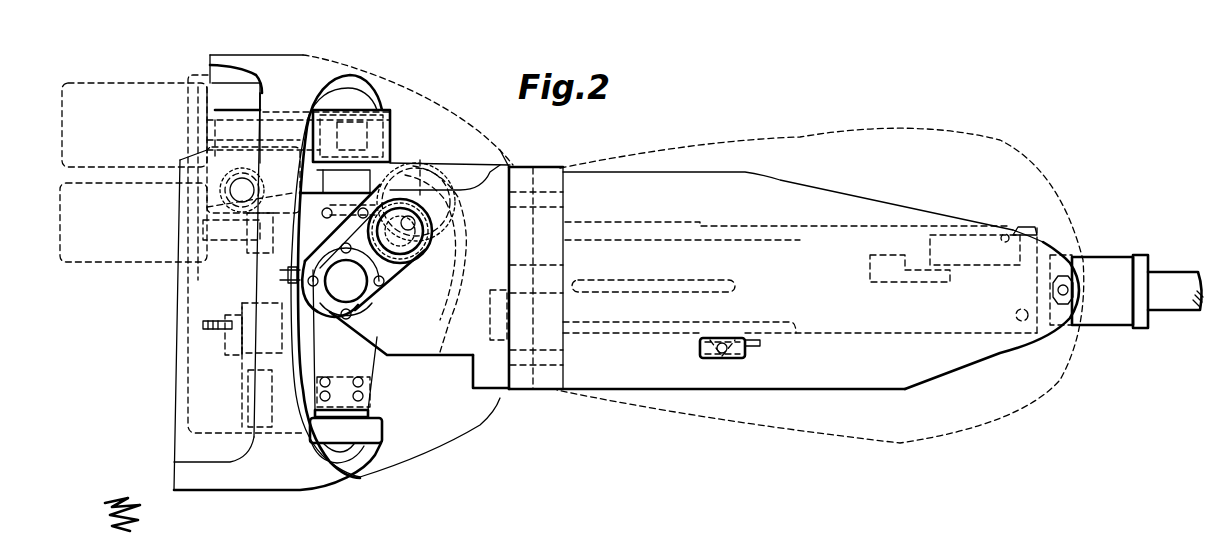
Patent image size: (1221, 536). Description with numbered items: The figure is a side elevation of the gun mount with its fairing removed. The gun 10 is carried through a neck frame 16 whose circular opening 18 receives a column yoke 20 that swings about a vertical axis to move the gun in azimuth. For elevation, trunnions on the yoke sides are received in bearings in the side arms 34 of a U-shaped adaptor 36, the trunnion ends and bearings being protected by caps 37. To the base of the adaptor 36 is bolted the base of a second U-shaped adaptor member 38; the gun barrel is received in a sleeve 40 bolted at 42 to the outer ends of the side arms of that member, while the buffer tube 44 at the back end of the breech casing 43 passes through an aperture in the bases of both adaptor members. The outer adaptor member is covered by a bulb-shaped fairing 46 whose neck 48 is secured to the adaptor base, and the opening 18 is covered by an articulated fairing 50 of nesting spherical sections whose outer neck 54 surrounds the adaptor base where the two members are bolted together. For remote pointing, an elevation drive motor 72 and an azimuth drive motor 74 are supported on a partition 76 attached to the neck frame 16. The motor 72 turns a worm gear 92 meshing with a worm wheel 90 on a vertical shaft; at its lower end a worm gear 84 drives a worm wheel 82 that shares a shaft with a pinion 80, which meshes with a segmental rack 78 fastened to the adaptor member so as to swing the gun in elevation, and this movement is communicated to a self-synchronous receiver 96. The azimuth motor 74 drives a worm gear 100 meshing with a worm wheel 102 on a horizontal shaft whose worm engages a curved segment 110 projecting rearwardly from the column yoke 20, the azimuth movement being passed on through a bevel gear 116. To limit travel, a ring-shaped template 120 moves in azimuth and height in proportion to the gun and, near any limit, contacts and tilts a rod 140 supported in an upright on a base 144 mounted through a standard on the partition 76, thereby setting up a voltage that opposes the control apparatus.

The gun 10 is at (1172, 277).
The neck frame 16 is at (263, 480).
The circular opening 18 is at (307, 370).
The column yoke 20 is at (387, 379).
The side arms 34 is at (407, 355).
The U-shaped adaptor 36 is at (490, 383).
The caps 37 is at (308, 290).
The U-shaped adaptor member 38 is at (730, 392).
The sleeve 40 is at (1117, 263).
The bolt 42 is at (1068, 277).
The breech casing 43 is at (840, 225).
The buffer tube 44 is at (502, 290).
The bulb-shaped fairing 46 is at (830, 132).
The neck 48 is at (553, 168).
The articulated fairing 50 is at (460, 113).
The neck 54 is at (525, 165).
The elevation drive motor 72 is at (85, 83).
The azimuth drive motor 74 is at (110, 183).
The partition 76 is at (177, 302).
The segmental rack 78 is at (457, 267).
The pinion 80 is at (413, 165).
The worm wheel 82 is at (409, 267).
The worm gear 84 is at (287, 253).
The worm wheel 90 is at (390, 130).
The worm gear 92 is at (397, 105).
The self-synchronous receiver 96 is at (440, 227).
The worm gear 100 is at (233, 240).
The worm wheel 102 is at (238, 157).
The curved segment 110 is at (265, 168).
The bevel gear 116 is at (222, 201).
The ring-shaped template 120 is at (307, 347).
The rod 140 is at (200, 325).
The base 144 is at (220, 360).